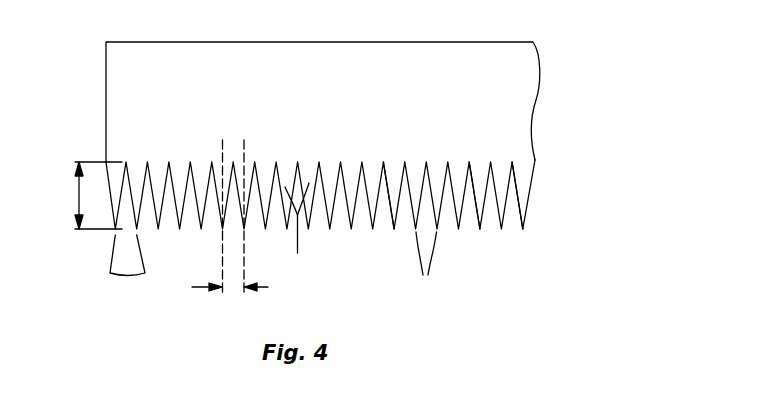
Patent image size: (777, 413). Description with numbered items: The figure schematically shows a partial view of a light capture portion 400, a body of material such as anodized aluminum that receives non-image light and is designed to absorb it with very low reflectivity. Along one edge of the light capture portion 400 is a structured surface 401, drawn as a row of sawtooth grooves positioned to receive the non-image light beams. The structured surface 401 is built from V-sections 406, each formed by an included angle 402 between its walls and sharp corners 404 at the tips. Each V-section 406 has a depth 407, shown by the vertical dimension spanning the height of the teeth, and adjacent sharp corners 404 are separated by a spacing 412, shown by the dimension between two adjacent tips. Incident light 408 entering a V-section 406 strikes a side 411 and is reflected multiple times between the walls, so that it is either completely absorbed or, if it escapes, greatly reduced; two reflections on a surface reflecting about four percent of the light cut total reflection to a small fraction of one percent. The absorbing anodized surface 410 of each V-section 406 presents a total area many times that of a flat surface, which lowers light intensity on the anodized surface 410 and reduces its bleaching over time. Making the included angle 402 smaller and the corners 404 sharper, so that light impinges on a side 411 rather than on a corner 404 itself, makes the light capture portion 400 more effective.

The light capture portion 400 is at (507, 27).
The structured surface 401 is at (546, 182).
The included angle 402 is at (127, 278).
The sharp corner 404 is at (428, 267).
The V-section 406 is at (298, 231).
The depth 407 is at (79, 192).
The incident light 408 is at (399, 155).
The anodized surface 410 is at (476, 211).
The side 411 is at (519, 205).
The spacing 412 is at (192, 287).